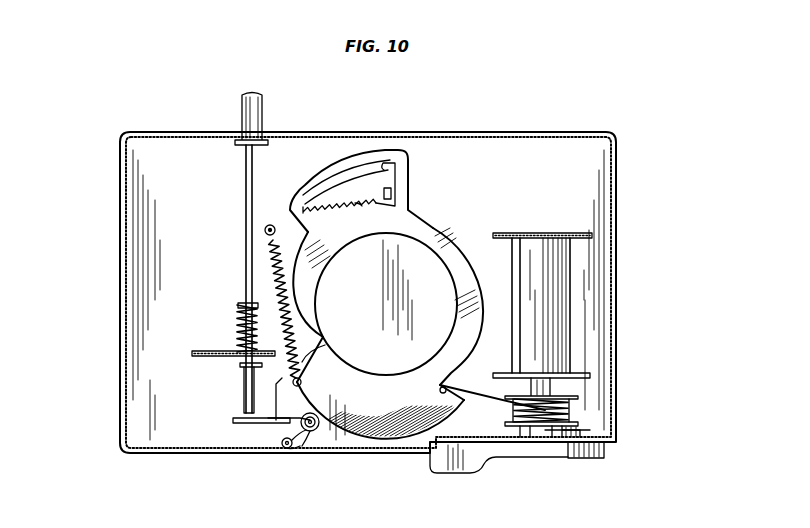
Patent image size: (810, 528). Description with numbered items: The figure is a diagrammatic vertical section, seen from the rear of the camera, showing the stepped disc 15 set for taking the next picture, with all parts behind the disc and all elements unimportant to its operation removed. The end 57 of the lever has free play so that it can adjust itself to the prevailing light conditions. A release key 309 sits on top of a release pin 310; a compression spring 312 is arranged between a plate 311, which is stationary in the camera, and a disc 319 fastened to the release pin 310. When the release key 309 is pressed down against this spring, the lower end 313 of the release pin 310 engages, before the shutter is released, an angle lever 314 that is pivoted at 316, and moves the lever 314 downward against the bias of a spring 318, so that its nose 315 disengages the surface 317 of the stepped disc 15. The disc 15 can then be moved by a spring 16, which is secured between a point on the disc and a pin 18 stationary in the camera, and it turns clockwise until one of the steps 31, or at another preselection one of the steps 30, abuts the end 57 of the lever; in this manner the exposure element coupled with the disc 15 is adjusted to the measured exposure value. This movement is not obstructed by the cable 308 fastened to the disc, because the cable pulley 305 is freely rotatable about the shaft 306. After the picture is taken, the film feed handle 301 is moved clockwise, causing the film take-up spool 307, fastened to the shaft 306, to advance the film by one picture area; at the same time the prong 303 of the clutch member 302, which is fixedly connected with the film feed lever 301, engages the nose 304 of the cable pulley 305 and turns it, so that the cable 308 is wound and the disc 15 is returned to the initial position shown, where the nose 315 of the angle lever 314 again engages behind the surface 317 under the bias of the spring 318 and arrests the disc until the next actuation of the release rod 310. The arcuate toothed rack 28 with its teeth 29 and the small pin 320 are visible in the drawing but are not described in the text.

The stepped disc 15 is at (447, 238).
The spring 16 is at (268, 255).
The pin 18 is at (270, 225).
The arcuate rack 28 is at (356, 163).
The ratchet teeth 29 is at (330, 192).
The steps 30 is at (393, 163).
The steps 31 is at (362, 206).
The end of lever 57 is at (392, 193).
The film feed handle 301 is at (464, 470).
The clutch member 302 is at (549, 440).
The prong 303 is at (510, 426).
The nose 304 is at (572, 430).
The cable pulley 305 is at (566, 410).
The shaft 306 is at (549, 390).
The film take-up spool 307 is at (560, 292).
The cable 308 is at (477, 394).
The release key 309 is at (262, 110).
The release pin 310 is at (247, 172).
The plate 311 is at (193, 350).
The compression spring 312 is at (240, 322).
The lower end of release pin 313 is at (245, 407).
The angle lever 314 is at (250, 423).
The nose 315 is at (282, 378).
The pivot 316 is at (316, 432).
The surface 317 is at (325, 345).
The spring 318 is at (303, 448).
The disc 319 is at (240, 305).
The stop pin 320 is at (440, 391).